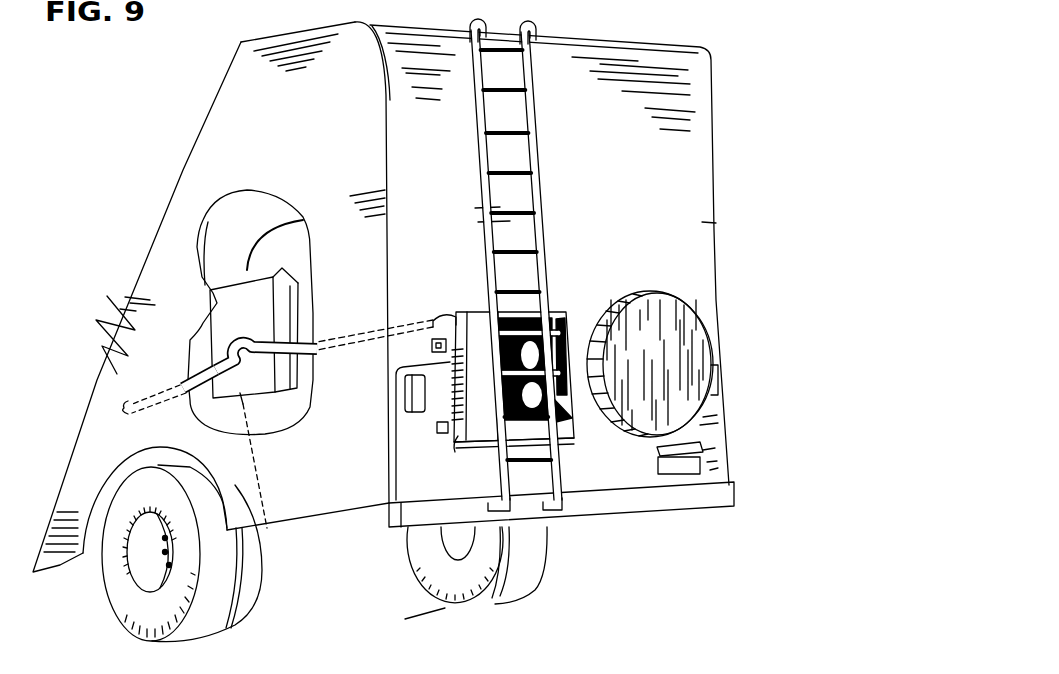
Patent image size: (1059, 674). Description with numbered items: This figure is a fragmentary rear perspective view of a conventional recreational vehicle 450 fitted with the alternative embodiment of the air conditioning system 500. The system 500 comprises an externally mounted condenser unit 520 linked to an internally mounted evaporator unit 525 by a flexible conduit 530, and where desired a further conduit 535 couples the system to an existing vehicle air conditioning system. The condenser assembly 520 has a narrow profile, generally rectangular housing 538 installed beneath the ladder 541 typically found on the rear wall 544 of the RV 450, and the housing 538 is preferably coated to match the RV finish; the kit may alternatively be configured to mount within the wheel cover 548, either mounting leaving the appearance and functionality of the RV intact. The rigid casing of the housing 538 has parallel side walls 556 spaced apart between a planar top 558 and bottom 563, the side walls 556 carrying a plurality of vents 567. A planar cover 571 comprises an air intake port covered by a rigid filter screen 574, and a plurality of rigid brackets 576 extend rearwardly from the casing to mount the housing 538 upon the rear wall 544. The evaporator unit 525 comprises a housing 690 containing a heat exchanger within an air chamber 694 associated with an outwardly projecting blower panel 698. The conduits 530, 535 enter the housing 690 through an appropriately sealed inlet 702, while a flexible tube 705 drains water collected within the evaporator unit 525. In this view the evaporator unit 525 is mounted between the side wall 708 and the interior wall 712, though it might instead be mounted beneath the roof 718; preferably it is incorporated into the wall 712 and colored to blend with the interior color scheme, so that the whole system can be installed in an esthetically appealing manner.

The recreational vehicle 450 is at (722, 201).
The alternative embodiment system 500 is at (440, 198).
The condenser unit 520 is at (581, 320).
The evaporator unit 525 is at (299, 271).
The flexible conduit 530 is at (375, 328).
The conduit 535 is at (180, 377).
The housing 538 is at (464, 306).
The ladder 541 is at (545, 117).
The rear wall 544 is at (534, 256).
The wheel cover 548 is at (695, 322).
The side walls 556 is at (466, 452).
The top 558 is at (562, 310).
The bottom 563 is at (542, 444).
The vents 567 is at (396, 374).
The planar cover 571 is at (479, 330).
The filter screen 574 is at (572, 414).
The brackets 576 is at (436, 428).
The housing 690 is at (272, 316).
The air chamber 694 is at (205, 399).
The blower panel 698 is at (292, 291).
The inlet 702 is at (298, 336).
The flexible tube 705 is at (258, 420).
The side wall 708 is at (152, 329).
The interior wall 712 is at (250, 312).
The roof 718 is at (308, 30).